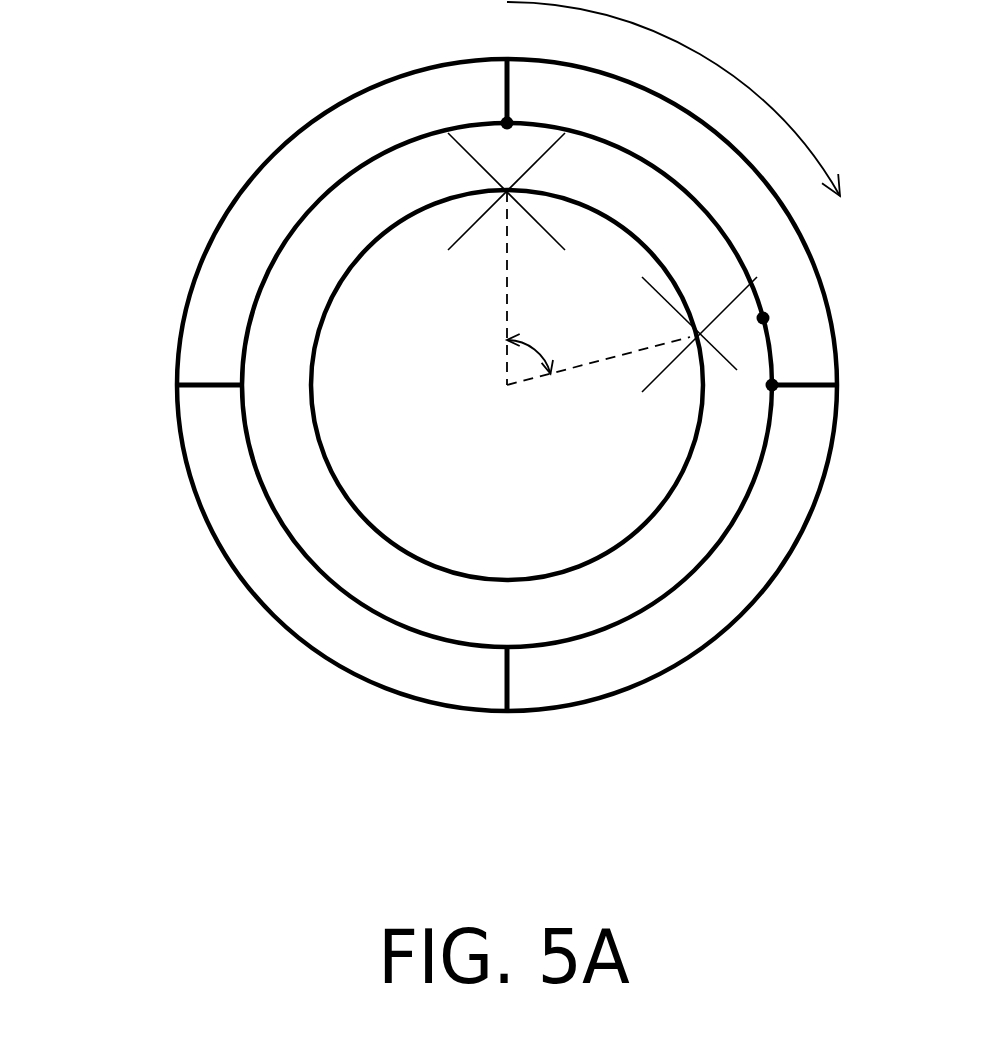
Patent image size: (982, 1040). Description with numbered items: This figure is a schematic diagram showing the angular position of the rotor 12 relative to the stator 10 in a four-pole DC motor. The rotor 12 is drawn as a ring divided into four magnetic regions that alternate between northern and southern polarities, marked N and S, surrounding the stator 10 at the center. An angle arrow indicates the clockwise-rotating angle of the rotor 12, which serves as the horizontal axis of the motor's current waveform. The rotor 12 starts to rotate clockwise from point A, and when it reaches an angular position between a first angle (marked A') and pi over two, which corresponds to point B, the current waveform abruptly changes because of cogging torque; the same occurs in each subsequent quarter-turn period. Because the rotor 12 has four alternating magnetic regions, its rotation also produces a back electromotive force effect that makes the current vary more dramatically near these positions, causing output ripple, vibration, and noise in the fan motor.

The rotor 12 is at (247, 182).
The stator 10 is at (310, 417).
The point A is at (609, 255).
The point B is at (754, 388).